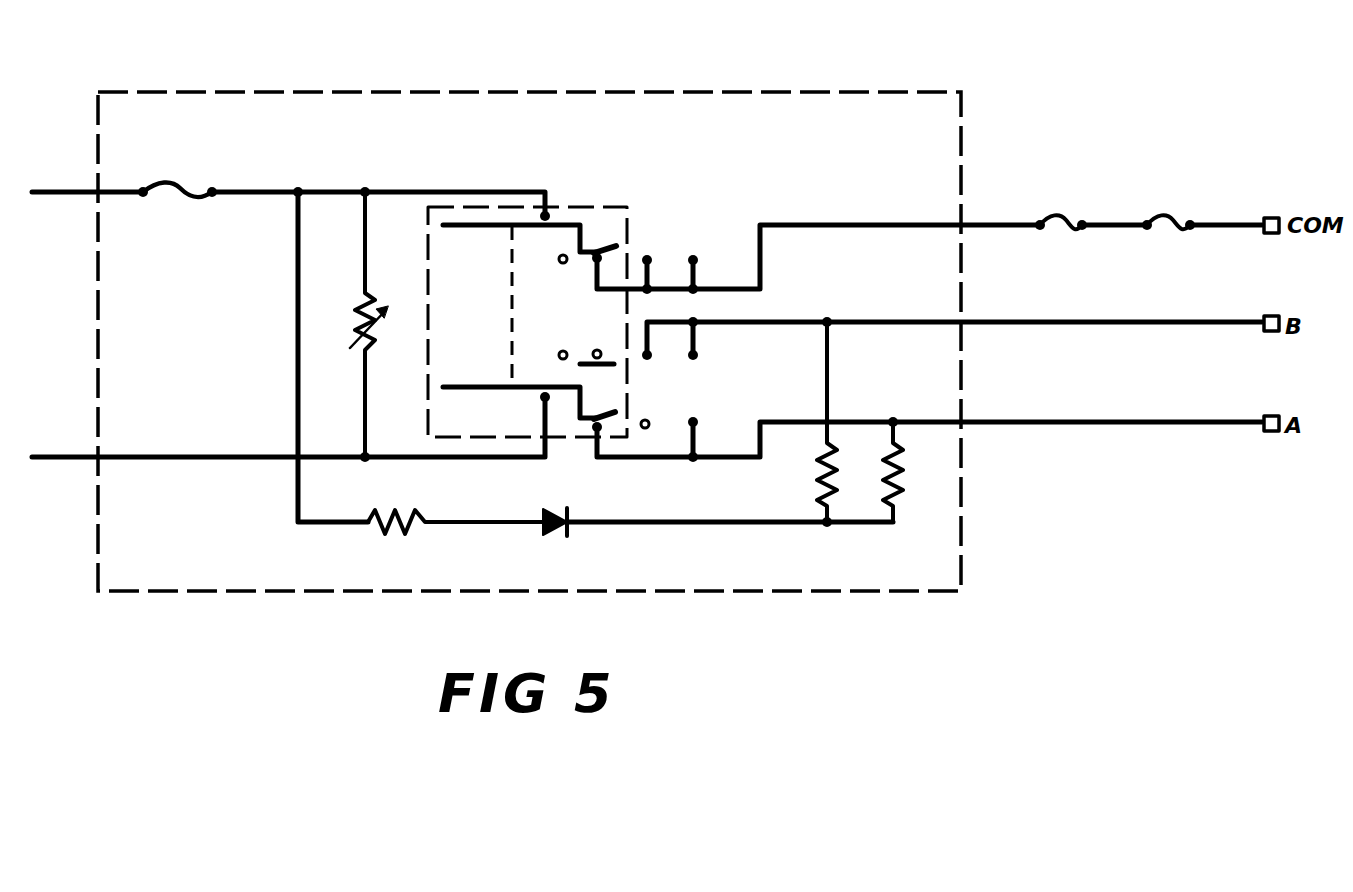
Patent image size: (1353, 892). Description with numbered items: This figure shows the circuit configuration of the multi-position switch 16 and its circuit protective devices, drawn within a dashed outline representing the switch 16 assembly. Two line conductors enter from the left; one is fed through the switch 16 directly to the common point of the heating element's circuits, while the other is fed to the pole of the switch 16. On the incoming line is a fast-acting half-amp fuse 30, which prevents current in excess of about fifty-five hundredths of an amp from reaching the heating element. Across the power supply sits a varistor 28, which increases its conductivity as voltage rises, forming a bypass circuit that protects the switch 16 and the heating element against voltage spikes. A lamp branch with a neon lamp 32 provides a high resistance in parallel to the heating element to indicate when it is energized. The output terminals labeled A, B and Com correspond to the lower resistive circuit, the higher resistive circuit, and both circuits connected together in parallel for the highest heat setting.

The four-position switch 16 is at (672, 92).
The varistor 28 is at (362, 300).
The fuse 30 is at (183, 190).
The neon lamp 32 is at (551, 536).